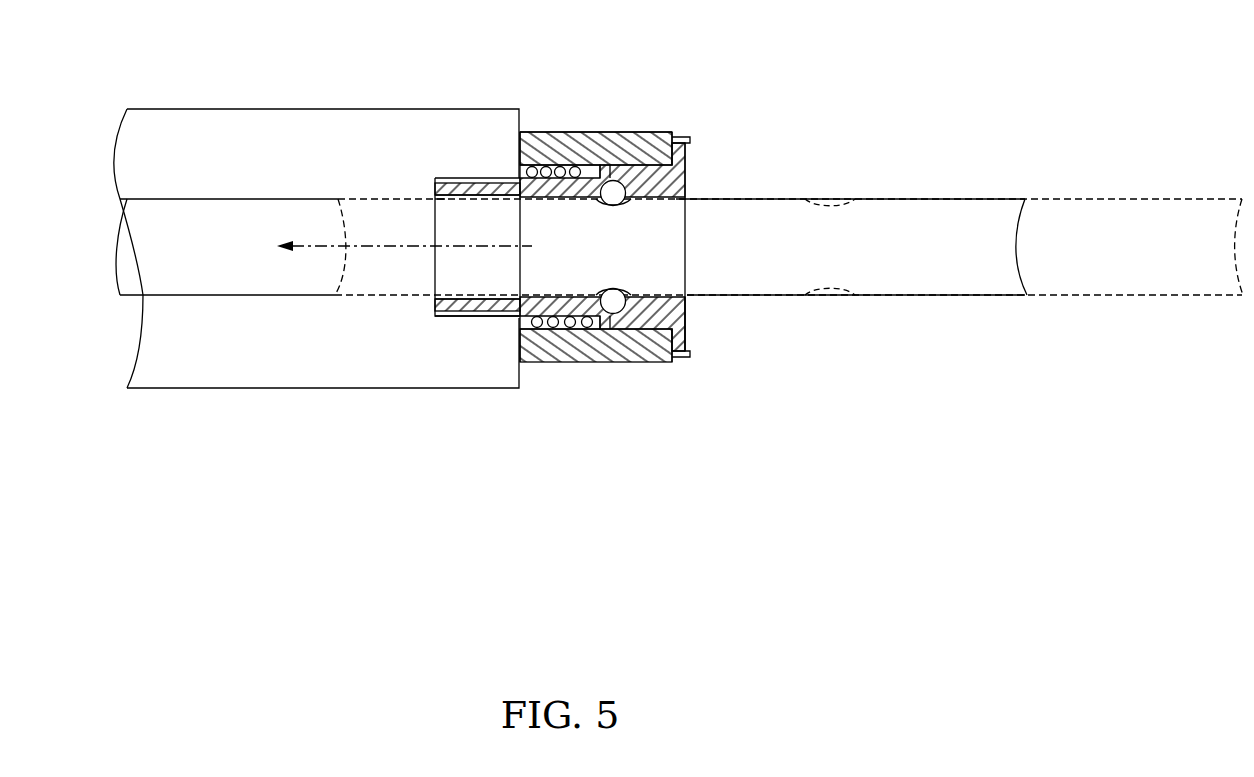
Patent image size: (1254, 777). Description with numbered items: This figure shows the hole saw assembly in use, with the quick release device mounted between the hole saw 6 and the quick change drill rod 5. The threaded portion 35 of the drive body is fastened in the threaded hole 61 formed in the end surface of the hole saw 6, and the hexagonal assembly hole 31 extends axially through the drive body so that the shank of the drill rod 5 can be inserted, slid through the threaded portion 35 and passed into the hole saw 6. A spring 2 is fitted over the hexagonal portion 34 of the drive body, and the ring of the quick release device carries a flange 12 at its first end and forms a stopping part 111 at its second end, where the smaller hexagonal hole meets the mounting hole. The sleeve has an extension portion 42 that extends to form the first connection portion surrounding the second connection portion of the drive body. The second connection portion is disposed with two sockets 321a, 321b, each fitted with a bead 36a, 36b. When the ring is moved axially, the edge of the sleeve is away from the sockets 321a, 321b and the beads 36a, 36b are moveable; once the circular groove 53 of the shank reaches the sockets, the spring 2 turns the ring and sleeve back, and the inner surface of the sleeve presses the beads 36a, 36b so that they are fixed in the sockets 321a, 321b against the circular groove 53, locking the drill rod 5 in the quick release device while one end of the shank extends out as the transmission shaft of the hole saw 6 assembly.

The spring 2 is at (553, 330).
The drill rod 5 is at (889, 199).
The hole saw 6 is at (353, 388).
The flange 12 is at (692, 132).
The assembly hole 31 is at (433, 197).
The hexagonal portion 34 is at (570, 167).
The threaded portion 35 is at (455, 180).
The bead 36a is at (608, 181).
The bead 36b is at (614, 313).
The extension portion 42 is at (683, 170).
The circular groove 53 is at (688, 315).
The threaded hole 61 is at (506, 318).
The stopping part 111 is at (537, 132).
The socket 321a is at (635, 180).
The socket 321b is at (633, 314).